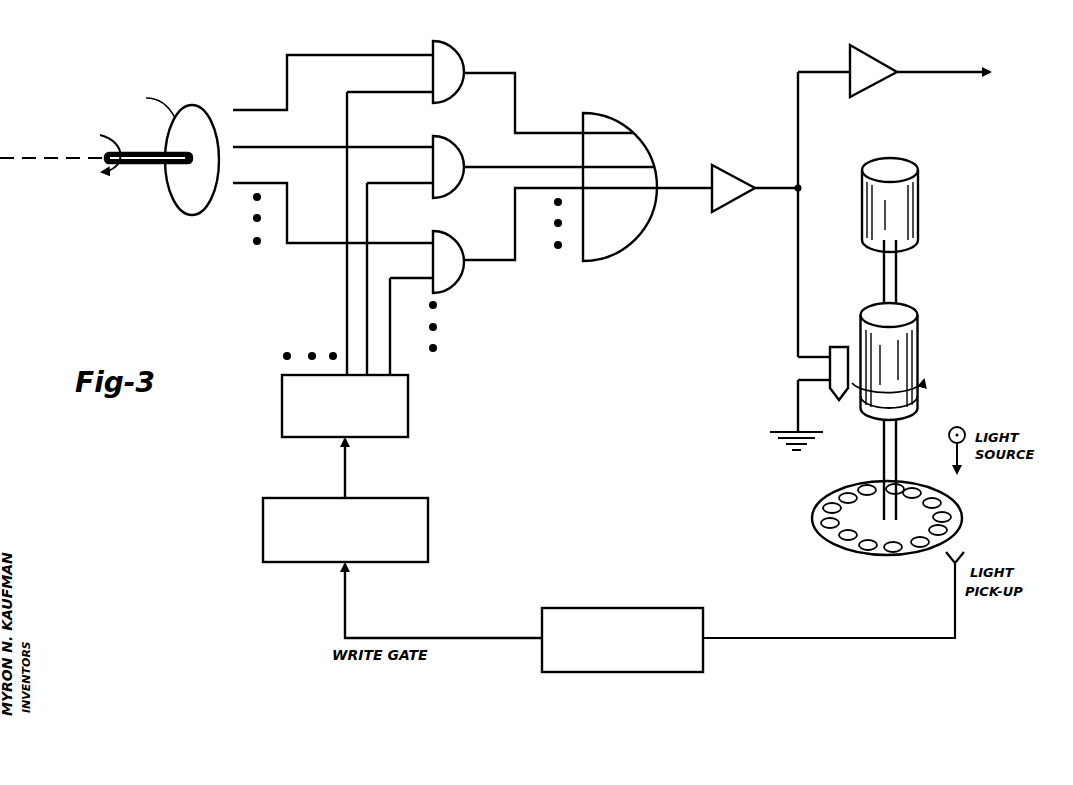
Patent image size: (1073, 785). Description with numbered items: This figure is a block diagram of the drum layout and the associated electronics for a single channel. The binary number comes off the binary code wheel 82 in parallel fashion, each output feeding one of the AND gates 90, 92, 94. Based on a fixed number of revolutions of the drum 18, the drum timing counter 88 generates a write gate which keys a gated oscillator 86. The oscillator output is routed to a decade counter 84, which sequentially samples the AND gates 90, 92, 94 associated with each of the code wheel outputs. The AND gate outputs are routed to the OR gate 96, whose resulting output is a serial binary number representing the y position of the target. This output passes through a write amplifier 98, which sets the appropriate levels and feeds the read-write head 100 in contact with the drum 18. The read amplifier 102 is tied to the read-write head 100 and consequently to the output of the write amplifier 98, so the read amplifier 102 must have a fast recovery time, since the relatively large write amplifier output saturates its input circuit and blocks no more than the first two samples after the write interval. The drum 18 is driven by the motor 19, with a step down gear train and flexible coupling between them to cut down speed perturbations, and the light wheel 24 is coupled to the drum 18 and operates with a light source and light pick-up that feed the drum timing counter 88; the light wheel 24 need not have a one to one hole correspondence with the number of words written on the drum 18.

The code wheel 82 is at (182, 210).
The counter 84 is at (409, 412).
The gated oscillator 86 is at (429, 520).
The drum timing counter 88 is at (614, 673).
The AND gate 90 is at (455, 240).
The AND gate 92 is at (455, 145).
The AND gate 94 is at (456, 50).
The OR gate 96 is at (625, 125).
The write amplifier 98 is at (738, 200).
The read-write head 100 is at (836, 347).
The read amplifier 102 is at (884, 80).
The drum 18 is at (913, 323).
The motor 19 is at (916, 180).
The light wheel 24 is at (862, 553).